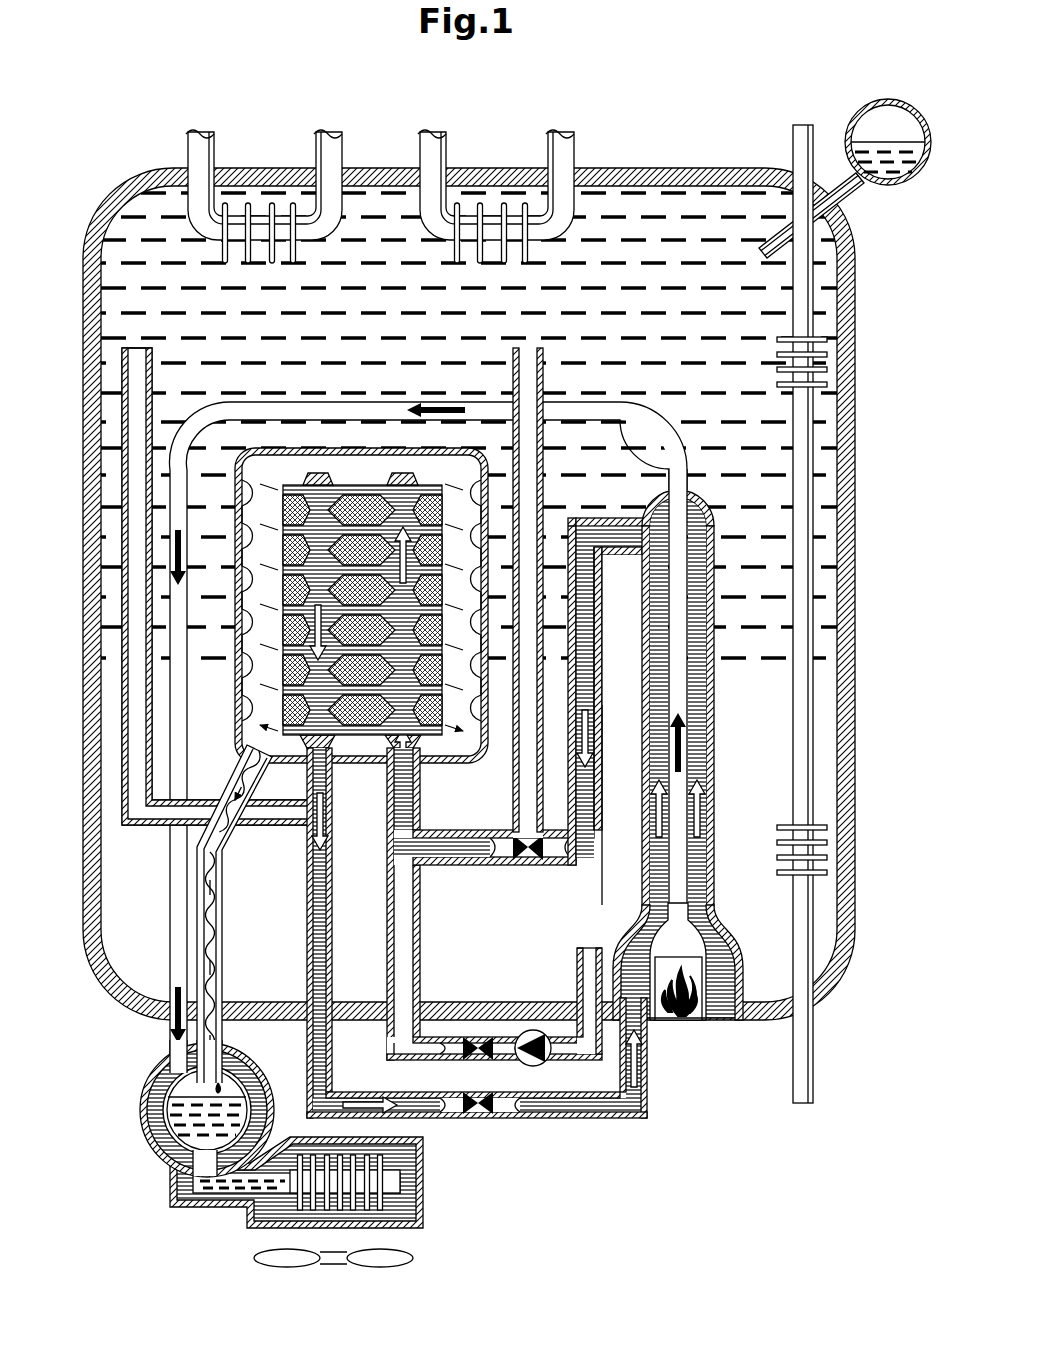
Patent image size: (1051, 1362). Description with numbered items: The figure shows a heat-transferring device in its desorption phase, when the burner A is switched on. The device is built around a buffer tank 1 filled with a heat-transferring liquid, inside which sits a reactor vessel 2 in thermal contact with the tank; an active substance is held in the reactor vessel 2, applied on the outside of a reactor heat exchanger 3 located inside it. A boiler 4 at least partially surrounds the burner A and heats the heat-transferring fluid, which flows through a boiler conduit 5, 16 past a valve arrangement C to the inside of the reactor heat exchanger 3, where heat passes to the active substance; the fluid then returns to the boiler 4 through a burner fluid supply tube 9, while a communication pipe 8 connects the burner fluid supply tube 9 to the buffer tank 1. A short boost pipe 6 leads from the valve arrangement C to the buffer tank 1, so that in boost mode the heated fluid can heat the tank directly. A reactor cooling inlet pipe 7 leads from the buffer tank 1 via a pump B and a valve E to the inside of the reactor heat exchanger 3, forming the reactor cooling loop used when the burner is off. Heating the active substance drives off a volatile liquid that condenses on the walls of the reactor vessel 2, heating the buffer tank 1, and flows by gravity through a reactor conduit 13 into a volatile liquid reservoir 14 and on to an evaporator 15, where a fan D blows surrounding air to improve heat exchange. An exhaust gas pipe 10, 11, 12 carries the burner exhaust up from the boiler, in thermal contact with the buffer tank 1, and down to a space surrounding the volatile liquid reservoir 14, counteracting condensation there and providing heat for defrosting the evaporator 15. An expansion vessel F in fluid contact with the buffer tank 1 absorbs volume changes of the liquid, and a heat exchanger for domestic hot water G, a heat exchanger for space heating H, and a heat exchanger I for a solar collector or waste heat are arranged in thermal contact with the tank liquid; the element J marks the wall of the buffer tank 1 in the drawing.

The buffer tank 1 is at (118, 891).
The reactor vessel 2 is at (260, 462).
The reactor heat exchanger 3 is at (315, 490).
The boiler 4 is at (720, 960).
The boiler conduit 5 is at (697, 744).
The boost pipe 6 is at (527, 378).
The reactor cooling inlet pipe 7 is at (587, 957).
The communication pipe 8 is at (130, 515).
The burner fluid supply tube 9 is at (627, 1104).
The exhaust gas pipe 10 is at (677, 863).
The exhaust gas pipe 11 is at (655, 406).
The exhaust gas pipe 12 is at (170, 1045).
The reactor conduit 13 is at (238, 767).
The volatile liquid reservoir 14 is at (180, 1132).
The evaporator 15 is at (380, 1183).
The boiler conduit 16 is at (585, 678).
The burner A is at (680, 1013).
The pump B is at (537, 1040).
The valve arrangement C is at (535, 857).
The fan D is at (403, 1250).
The valve E is at (487, 1040).
The expansion vessel F is at (880, 122).
The heat exchanger for domestic hot water G is at (808, 746).
The heat exchanger for space heating H is at (236, 212).
The heat exchanger I is at (466, 212).
The tank wall J is at (848, 917).